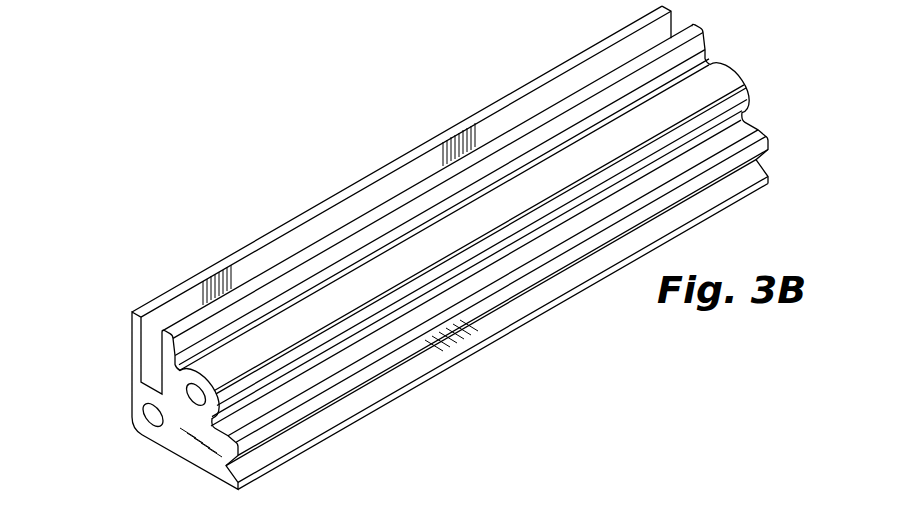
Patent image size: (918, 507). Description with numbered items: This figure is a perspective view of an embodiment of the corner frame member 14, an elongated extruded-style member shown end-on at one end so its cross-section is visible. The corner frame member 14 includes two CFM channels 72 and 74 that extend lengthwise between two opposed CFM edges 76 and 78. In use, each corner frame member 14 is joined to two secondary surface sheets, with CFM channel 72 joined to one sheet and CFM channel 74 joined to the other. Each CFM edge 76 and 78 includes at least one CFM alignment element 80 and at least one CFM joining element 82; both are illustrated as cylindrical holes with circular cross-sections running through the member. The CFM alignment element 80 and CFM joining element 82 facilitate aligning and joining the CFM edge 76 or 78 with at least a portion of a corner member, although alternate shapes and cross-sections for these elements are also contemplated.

The corner frame member 14 is at (578, 318).
The CFM channel 72 is at (392, 383).
The CFM channel 74 is at (342, 212).
The CFM edge 76 is at (130, 358).
The CFM edge 78 is at (713, 58).
The CFM alignment element 80 is at (148, 424).
The CFM joining element 82 is at (177, 412).